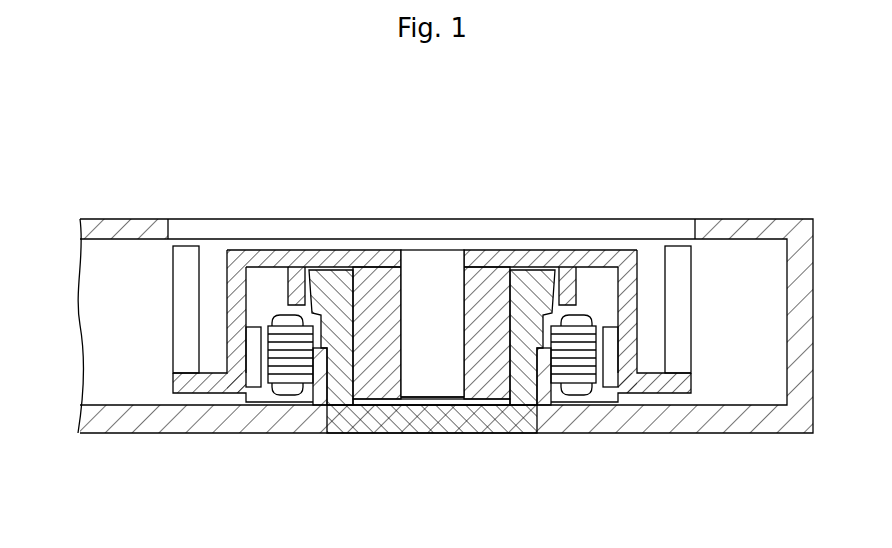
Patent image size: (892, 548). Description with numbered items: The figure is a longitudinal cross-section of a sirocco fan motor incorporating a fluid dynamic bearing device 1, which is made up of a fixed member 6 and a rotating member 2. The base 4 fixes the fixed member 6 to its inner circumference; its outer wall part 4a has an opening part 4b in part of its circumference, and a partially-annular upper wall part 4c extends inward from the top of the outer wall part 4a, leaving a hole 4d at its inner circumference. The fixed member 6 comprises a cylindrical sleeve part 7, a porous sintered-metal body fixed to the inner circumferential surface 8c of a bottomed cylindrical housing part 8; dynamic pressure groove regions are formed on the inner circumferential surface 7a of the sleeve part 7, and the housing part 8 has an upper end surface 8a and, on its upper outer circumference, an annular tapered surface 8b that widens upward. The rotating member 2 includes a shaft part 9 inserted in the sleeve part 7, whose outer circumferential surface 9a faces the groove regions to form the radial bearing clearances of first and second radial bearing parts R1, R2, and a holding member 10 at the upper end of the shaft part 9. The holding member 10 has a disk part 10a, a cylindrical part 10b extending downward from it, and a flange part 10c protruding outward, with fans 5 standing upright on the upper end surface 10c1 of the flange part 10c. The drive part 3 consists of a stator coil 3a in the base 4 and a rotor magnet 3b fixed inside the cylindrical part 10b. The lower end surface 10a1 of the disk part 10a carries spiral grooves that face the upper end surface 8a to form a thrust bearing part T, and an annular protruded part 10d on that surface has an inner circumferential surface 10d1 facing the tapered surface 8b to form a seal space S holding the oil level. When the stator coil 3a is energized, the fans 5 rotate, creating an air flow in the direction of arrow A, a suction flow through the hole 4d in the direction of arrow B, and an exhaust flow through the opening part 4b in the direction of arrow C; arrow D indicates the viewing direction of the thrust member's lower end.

The fluid dynamic bearing device 1 is at (497, 232).
The rotating member 2 is at (399, 232).
The drive part 3 is at (443, 414).
The stator coil 3a is at (575, 392).
The rotor magnet 3b is at (608, 388).
The base 4 is at (446, 340).
The outer wall part 4a is at (802, 318).
The opening part 4b is at (88, 272).
The upper wall part 4c is at (763, 227).
The hole 4d is at (188, 228).
The fans 5 is at (180, 282).
The fixed member 6 is at (362, 453).
The sleeve part 7 is at (431, 372).
The inner circumferential surface 7a is at (396, 380).
The housing part 8 is at (412, 340).
The upper end surface 8a is at (310, 262).
The tapered surface 8b is at (540, 268).
The inner circumferential surface 8c is at (525, 398).
The shaft part 9 is at (432, 327).
The outer circumferential surface 9a is at (458, 396).
The holding member 10 is at (432, 311).
The disk part 10a is at (383, 258).
The lower end surface 10a1 is at (346, 252).
The cylindrical part 10b is at (250, 388).
The flange part 10c is at (197, 383).
The upper end surface 10c1 is at (653, 368).
The protruded part 10d is at (603, 252).
The inner circumferential surface 10d1 is at (563, 265).
The thrust bearing part T is at (326, 256).
The first radial bearing part R1 is at (382, 288).
The second radial bearing part R2 is at (384, 375).
The seal space S is at (622, 267).
The arrow A is at (183, 335).
The arrow B is at (654, 254).
The arrow C is at (98, 335).
The arrow D is at (427, 512).